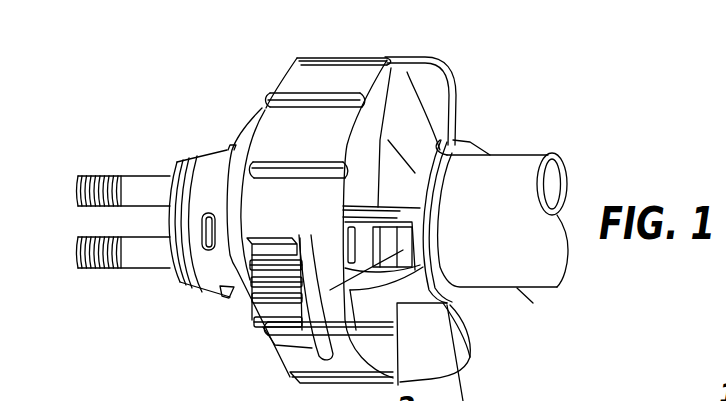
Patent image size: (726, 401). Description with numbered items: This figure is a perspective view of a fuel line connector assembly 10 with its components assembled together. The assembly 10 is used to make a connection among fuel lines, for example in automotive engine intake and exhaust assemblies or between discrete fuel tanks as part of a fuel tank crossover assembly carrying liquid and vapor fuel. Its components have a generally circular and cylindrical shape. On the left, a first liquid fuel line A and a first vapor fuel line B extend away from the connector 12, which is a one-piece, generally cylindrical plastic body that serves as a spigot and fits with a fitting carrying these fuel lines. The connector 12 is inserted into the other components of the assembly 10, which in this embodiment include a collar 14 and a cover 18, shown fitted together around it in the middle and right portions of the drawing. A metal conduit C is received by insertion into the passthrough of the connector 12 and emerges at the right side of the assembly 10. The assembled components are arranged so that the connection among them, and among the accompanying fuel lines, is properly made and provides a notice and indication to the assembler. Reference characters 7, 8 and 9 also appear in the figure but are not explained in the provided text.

The nozzle housing edge 7 is at (383, 160).
The bracket arm 8 is at (425, 84).
The nozzle / latch strip 9 is at (334, 266).
The fuel line connector assembly 10 is at (402, 203).
The connector 12 is at (204, 289).
The collar 14 is at (450, 395).
The cover 18 is at (404, 86).
The first liquid fuel line A is at (138, 268).
The first vapor fuel line B is at (138, 177).
The metal conduit C is at (467, 289).